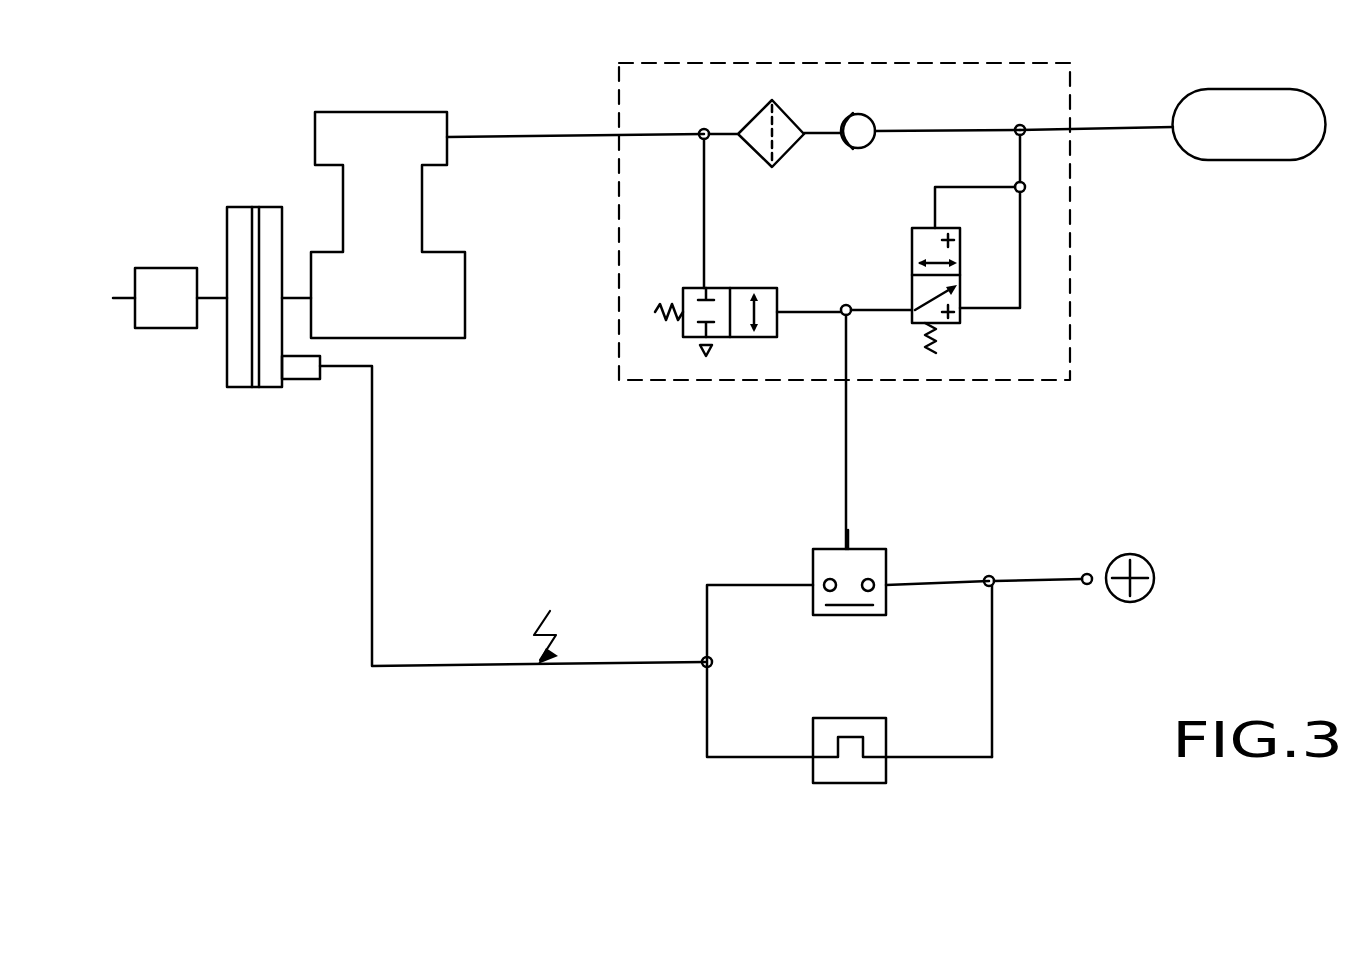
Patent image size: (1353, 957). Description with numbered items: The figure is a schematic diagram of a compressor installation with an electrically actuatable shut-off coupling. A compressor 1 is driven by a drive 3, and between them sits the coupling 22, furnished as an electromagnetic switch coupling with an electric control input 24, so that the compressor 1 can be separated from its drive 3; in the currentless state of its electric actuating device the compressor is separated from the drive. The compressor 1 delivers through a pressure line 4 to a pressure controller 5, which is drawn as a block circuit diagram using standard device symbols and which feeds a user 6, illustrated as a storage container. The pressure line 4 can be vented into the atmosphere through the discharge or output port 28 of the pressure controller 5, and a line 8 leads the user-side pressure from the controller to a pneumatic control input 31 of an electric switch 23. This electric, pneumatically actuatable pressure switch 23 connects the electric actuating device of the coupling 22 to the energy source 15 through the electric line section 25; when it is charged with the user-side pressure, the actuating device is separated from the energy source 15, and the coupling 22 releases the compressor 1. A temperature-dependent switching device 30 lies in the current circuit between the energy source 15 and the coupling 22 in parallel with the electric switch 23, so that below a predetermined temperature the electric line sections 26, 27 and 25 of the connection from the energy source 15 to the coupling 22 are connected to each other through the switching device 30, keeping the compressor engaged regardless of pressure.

The compressor 1 is at (352, 125).
The drive 3 is at (158, 315).
The pressure line 4 is at (468, 137).
The pressure controller 5 is at (658, 98).
The user 6 is at (1220, 107).
The control line 8 is at (843, 317).
The energy source 15 is at (1137, 560).
The coupling 22 is at (242, 377).
The electric switch 23 is at (859, 560).
The electric control input 24 is at (300, 380).
The electric line section 25 is at (507, 667).
The electric line section 26 is at (992, 647).
The electric line section 27 is at (753, 760).
The output port 28 is at (710, 357).
The temperature-dependent switching device 30 is at (873, 768).
The pneumatic control input 31 is at (842, 548).